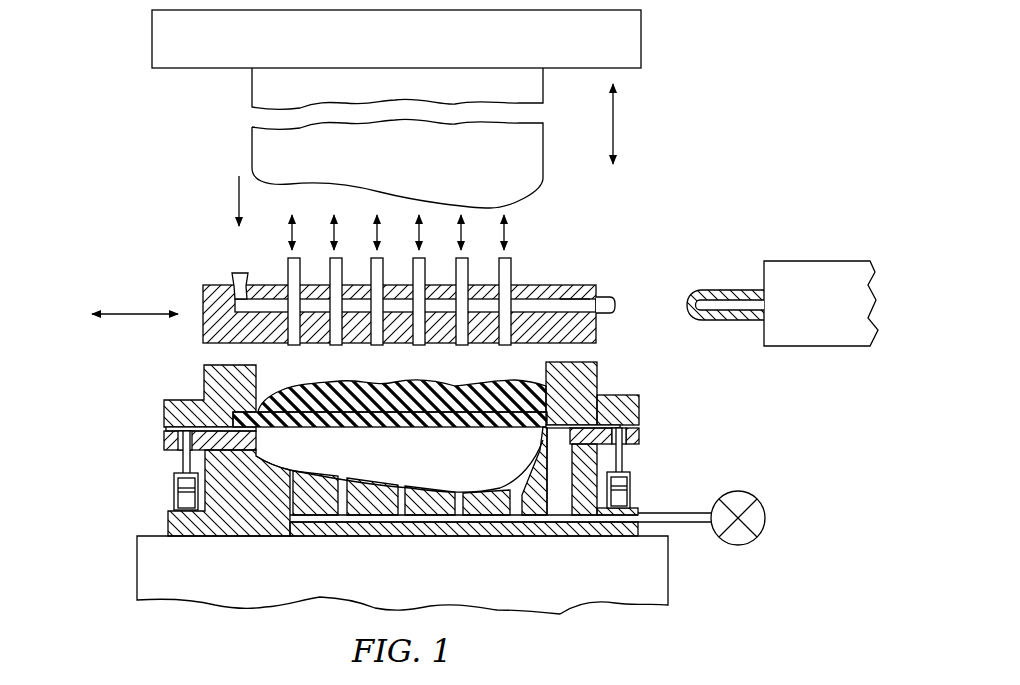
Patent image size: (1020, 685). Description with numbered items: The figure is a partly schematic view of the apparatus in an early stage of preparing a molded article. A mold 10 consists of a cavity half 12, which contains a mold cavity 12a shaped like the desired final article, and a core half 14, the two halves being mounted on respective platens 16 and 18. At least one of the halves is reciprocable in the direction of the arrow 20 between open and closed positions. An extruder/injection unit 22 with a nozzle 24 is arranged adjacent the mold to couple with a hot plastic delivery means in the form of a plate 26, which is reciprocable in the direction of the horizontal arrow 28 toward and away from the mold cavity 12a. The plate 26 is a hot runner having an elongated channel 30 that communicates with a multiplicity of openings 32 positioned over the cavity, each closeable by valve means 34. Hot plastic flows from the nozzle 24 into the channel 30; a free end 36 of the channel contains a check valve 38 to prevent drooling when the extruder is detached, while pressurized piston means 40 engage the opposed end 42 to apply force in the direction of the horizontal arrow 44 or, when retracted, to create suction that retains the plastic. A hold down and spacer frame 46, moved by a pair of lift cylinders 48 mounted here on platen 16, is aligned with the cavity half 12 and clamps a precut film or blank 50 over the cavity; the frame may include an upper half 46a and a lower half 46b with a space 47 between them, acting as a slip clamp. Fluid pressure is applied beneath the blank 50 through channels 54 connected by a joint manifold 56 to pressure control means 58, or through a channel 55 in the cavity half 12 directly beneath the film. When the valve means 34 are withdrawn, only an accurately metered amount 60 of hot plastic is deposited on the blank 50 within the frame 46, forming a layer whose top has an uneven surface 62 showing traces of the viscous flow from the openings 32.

The mold 10 is at (175, 243).
The cavity half 12 is at (593, 460).
The mold cavity 12a is at (424, 460).
The core half 14 is at (524, 151).
The platen 16 is at (651, 589).
The platen 18 is at (534, 49).
The arrow 20 is at (615, 113).
The extruder/injection unit 22 is at (821, 331).
The nozzle 24 is at (724, 302).
The plate 26 is at (583, 288).
The horizontal arrow 28 is at (126, 314).
The elongated channel 30 is at (556, 300).
The openings 32 is at (296, 346).
The valve means 34 is at (374, 265).
The free end 36 is at (586, 309).
The check valve 38 is at (610, 301).
The pressurized piston means 40 is at (237, 272).
The opposed end 42 is at (235, 305).
The horizontal arrow 44 is at (239, 192).
The hold down and spacer frame 46 is at (164, 428).
The upper half 46a is at (228, 382).
The lower half 46b is at (170, 444).
The space 47 is at (634, 431).
The lift cylinders 48 is at (176, 491).
The precut film or blank 50 is at (512, 428).
The channels 54 is at (401, 515).
The channel 55 is at (622, 501).
The joint manifold 56 is at (553, 521).
The pressure control means 58 is at (748, 499).
The metered amount 60 is at (578, 386).
The uneven surface 62 is at (310, 398).